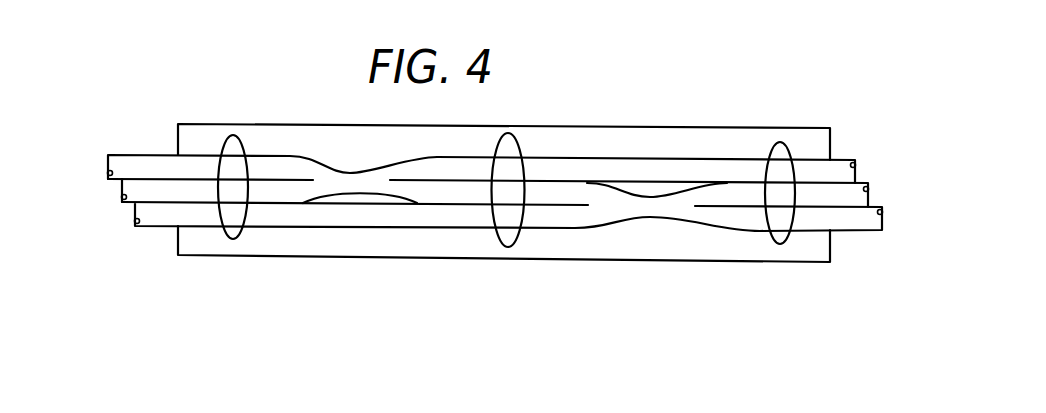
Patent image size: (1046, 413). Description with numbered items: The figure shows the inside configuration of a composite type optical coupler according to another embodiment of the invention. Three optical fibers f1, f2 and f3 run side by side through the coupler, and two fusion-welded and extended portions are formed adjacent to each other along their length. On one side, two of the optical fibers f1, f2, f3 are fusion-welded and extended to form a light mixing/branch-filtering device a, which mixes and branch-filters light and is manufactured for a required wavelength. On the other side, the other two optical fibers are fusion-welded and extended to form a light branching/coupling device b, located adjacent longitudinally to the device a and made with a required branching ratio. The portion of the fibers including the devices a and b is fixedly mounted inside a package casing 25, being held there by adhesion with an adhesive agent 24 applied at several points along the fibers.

The adhesive agent 24 is at (233, 239).
The package casing 25 is at (380, 253).
The light mixing/branch-filtering device a is at (635, 225).
The light branching/coupling device b is at (349, 167).
The optical fiber f1 is at (107, 163).
The optical fiber f2 is at (120, 187).
The optical fiber f3 is at (133, 208).